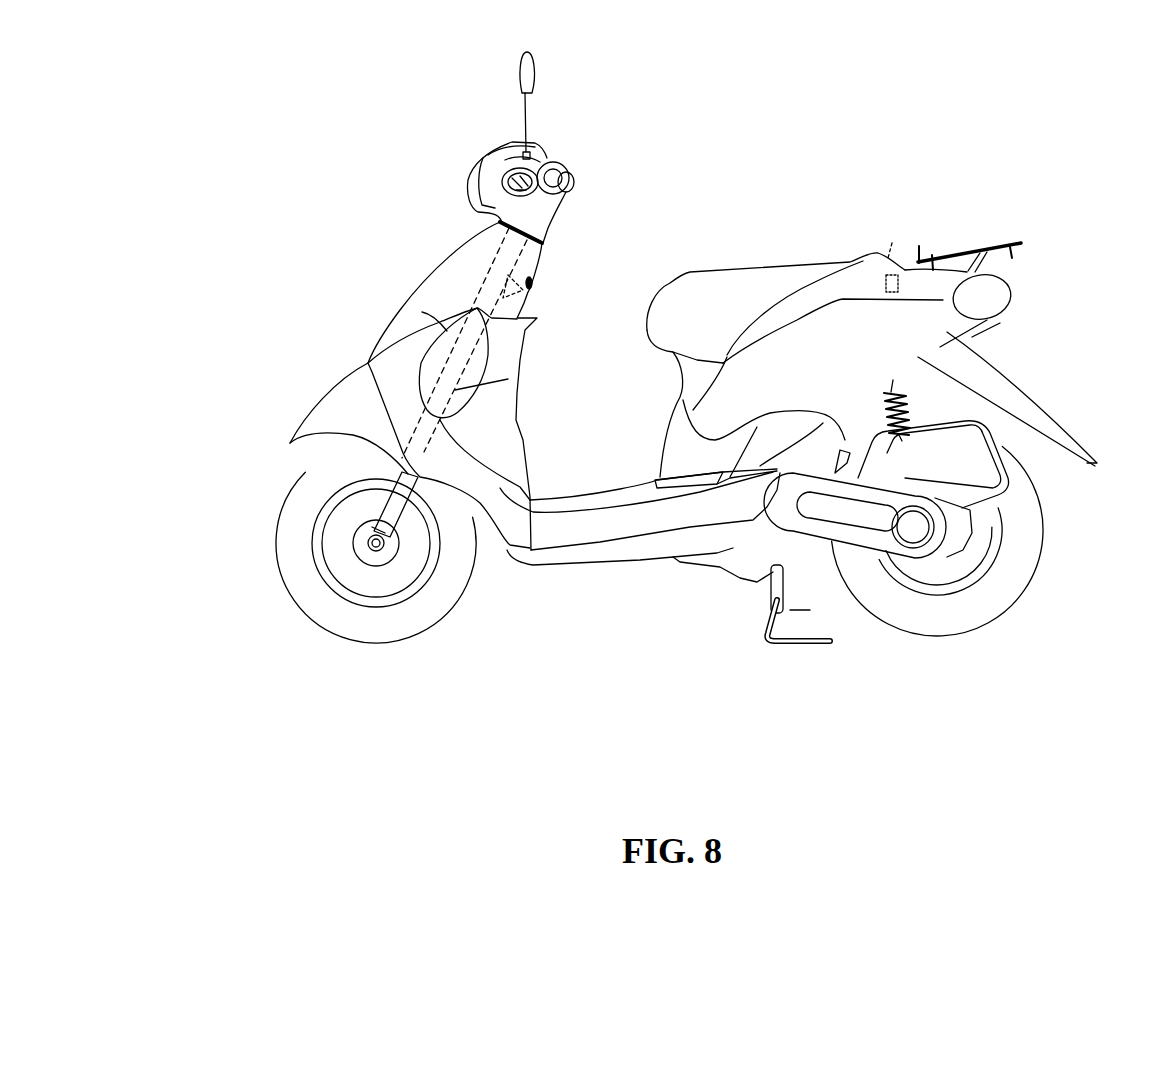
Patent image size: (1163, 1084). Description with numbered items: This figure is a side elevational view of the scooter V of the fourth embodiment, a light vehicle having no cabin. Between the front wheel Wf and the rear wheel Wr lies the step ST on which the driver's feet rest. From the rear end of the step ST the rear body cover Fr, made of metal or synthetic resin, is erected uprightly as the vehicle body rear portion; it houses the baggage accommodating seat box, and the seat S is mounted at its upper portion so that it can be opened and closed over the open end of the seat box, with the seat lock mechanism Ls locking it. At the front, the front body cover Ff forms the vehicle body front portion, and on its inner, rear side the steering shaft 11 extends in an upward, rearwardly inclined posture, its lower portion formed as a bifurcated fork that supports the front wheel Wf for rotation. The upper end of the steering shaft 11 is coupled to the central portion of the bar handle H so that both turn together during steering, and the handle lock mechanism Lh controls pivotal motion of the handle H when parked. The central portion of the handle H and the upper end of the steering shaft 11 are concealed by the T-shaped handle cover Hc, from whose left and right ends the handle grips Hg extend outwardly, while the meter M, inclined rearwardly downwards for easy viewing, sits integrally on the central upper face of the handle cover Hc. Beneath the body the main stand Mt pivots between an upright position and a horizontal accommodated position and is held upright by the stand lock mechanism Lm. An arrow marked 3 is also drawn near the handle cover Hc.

The handle cover Hc is at (498, 153).
The handle grip Hg is at (575, 185).
The meter M is at (556, 150).
The bar handle H is at (562, 204).
The viewing direction of FIG. 3 is at (640, 143).
The scooter V is at (818, 188).
The front body cover Ff is at (450, 267).
The steering shaft 11 is at (447, 330).
The handle lock mechanism Lh is at (540, 277).
The front wheel Wf is at (290, 573).
The step ST is at (590, 493).
The seat S is at (737, 280).
The seat lock mechanism Ls is at (892, 251).
The rear body cover Fr is at (983, 350).
The rear wheel Wr is at (1013, 568).
The stand lock mechanism Lm is at (783, 573).
The main stand Mt is at (798, 648).